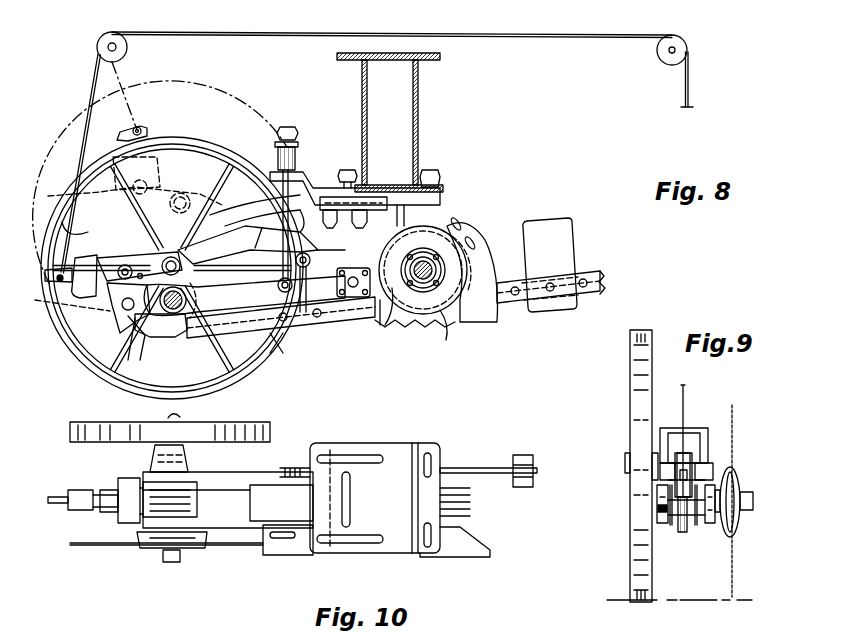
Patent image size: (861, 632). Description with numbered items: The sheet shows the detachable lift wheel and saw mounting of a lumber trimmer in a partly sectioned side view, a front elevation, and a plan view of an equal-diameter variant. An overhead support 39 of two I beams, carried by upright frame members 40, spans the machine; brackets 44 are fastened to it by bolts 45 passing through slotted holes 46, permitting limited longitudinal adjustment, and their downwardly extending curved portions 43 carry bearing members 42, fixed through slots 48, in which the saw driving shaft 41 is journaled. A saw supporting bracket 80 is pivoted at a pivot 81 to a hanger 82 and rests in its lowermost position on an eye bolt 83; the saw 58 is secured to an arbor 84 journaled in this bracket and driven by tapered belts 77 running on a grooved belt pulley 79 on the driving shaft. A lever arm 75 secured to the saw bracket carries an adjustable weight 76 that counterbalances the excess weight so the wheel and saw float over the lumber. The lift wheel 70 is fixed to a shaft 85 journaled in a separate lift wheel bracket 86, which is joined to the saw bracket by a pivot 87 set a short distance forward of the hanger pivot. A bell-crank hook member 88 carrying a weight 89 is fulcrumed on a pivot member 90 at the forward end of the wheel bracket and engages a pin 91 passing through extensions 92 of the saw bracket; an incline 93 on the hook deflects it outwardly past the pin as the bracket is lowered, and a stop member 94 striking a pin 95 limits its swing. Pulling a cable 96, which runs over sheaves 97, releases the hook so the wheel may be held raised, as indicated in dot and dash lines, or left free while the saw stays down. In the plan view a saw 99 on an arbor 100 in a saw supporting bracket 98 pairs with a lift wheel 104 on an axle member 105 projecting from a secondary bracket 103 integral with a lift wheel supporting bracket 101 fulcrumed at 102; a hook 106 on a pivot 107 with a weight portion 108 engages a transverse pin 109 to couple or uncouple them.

In FIG. 8, the overhead support 39 is at (367, 110).
In FIG. 8, the upright frame members 40 is at (440, 312).
In FIG. 8, the saw driving shaft 41 is at (432, 262).
In FIG. 8, the bearing members 42 is at (418, 290).
In FIG. 8, the curved portions 43 is at (470, 240).
In FIG. 8, the brackets 44 is at (432, 182).
In FIG. 10, the brackets 44 is at (400, 453).
In FIG. 8, the bolts 45 is at (346, 170).
In FIG. 10, the slotted holes 46 is at (425, 465).
In FIG. 8, the slots 48 is at (455, 215).
In FIG. 9, the saw 58 is at (733, 412).
In FIG. 8, the lift wheel 70 is at (218, 148).
In FIG. 9, the lift wheel 70 is at (637, 395).
In FIG. 8, the lever arm 75 is at (592, 276).
In FIG. 8, the weight 76 is at (573, 245).
In FIG. 8, the belts 77 is at (280, 340).
In FIG. 8, the belt pulley 79 is at (452, 325).
In FIG. 8, the saw supporting bracket 80 is at (268, 300).
In FIG. 8, the pivot 81 is at (353, 300).
In FIG. 8, the hanger 82 is at (372, 215).
In FIG. 8, the eye bolt 83 is at (287, 126).
In FIG. 8, the arbor 84 is at (178, 312).
In FIG. 9, the arbor 84 is at (745, 495).
In FIG. 8, the shaft 85 is at (171, 257).
In FIG. 9, the shaft 85 is at (625, 462).
In FIG. 8, the lift wheel bracket 86 is at (232, 222).
In FIG. 9, the lift wheel bracket 86 is at (690, 432).
In FIG. 8, the pivot 87 is at (304, 316).
In FIG. 8, the hook member 88 is at (50, 193).
In FIG. 9, the hook member 88 is at (680, 532).
In FIG. 8, the weight 89 is at (143, 131).
In FIG. 9, the weight 89 is at (680, 450).
In FIG. 8, the pivot member 90 is at (125, 265).
In FIG. 9, the pivot member 90 is at (710, 472).
In FIG. 8, the pin 91 is at (120, 308).
In FIG. 9, the pin 91 is at (657, 503).
In FIG. 8, the extensions 92 is at (147, 326).
In FIG. 9, the extensions 92 is at (662, 512).
In FIG. 8, the incline 93 is at (150, 345).
In FIG. 8, the stop member 94 is at (100, 265).
In FIG. 8, the pin 95 is at (140, 272).
In FIG. 8, the cable 96 is at (99, 62).
In FIG. 8, the sheaves 97 is at (127, 47).
In FIG. 10, the saw supporting bracket 98 is at (283, 466).
In FIG. 10, the saw 99 is at (243, 546).
In FIG. 10, the arbor 100 is at (170, 562).
In FIG. 10, the lift wheel supporting bracket 101 is at (235, 485).
In FIG. 10, the fulcrum 102 is at (290, 525).
In FIG. 10, the secondary bracket 103 is at (187, 455).
In FIG. 10, the lift wheel 104 is at (268, 434).
In FIG. 10, the axle member 105 is at (180, 424).
In FIG. 10, the hook 106 is at (106, 508).
In FIG. 10, the pivot 107 is at (122, 490).
In FIG. 10, the weight portion 108 is at (76, 490).
In FIG. 10, the transverse pin 109 is at (148, 482).